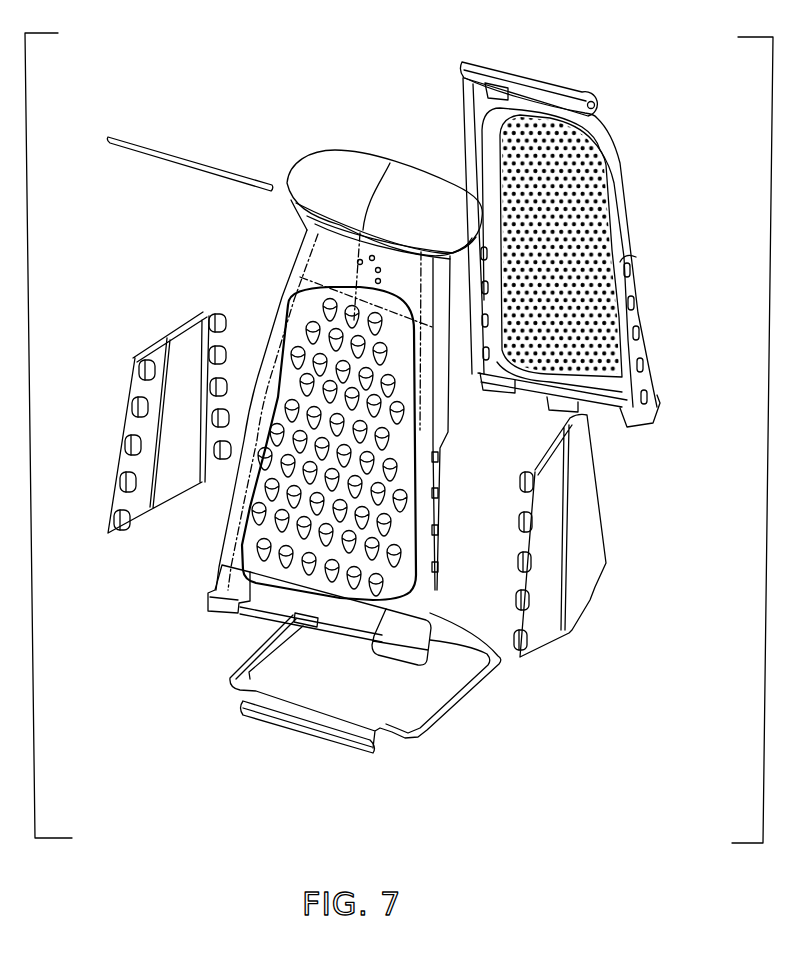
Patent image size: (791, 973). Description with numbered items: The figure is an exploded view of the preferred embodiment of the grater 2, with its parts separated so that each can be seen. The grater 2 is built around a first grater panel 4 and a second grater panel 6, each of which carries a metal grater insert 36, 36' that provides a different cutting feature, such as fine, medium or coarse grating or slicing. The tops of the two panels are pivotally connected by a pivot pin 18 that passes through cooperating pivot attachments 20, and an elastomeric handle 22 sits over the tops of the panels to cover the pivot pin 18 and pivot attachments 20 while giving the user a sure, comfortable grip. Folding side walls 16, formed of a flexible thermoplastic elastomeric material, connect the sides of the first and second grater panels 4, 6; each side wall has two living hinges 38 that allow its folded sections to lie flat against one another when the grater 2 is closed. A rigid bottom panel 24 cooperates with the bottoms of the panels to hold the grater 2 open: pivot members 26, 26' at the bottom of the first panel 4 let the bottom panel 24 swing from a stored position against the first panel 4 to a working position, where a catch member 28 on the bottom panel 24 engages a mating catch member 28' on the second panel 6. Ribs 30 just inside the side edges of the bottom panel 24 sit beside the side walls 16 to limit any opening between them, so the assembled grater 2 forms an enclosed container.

The grater 2 is at (605, 869).
The first grater panel 4 is at (300, 342).
The second grater panel 6 is at (593, 175).
The folding side walls 16 is at (172, 480).
The pivot pin 18 is at (162, 157).
The pivot attachments 20 is at (528, 80).
The handle 22 is at (338, 172).
The bottom panel 24 is at (393, 697).
The pivot member 26 is at (273, 703).
The pivot member 26' is at (308, 752).
The catch member 28 is at (439, 573).
The catch member 28' is at (522, 424).
The ribs 30 is at (460, 683).
The grater insert 36 is at (258, 443).
The grater insert 36' is at (612, 246).
The living hinges 38 is at (157, 390).